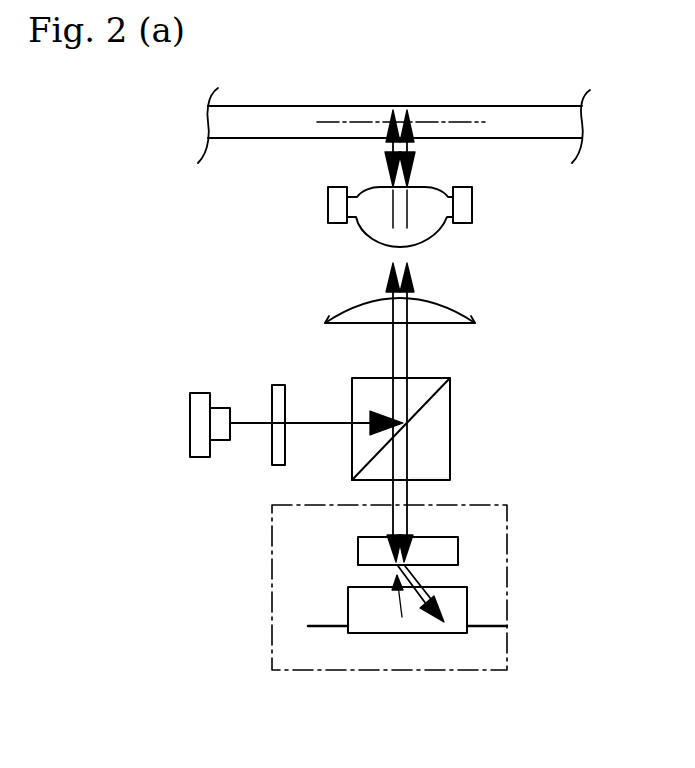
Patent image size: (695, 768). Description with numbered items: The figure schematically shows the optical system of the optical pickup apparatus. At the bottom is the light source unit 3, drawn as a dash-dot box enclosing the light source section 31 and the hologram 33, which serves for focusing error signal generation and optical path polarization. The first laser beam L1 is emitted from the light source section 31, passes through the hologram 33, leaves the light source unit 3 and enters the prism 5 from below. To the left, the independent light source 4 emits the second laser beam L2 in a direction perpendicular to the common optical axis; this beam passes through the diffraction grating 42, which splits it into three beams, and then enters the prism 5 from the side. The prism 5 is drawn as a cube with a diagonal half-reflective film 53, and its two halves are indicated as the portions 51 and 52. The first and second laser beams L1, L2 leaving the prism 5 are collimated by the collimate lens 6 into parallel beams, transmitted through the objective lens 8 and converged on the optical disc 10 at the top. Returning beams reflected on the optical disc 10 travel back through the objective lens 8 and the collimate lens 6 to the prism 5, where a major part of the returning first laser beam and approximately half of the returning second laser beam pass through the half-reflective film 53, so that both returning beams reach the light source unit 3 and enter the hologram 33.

The optical disc 10 is at (543, 128).
The objective lens 8 is at (473, 203).
The collimate lens 6 is at (450, 316).
The prism 5 is at (442, 405).
The beam splitting surface 51 is at (426, 395).
The prism 52 is at (432, 456).
The half-reflective film 53 is at (415, 400).
The independent light source 4 is at (190, 420).
The diffraction grating 42 is at (268, 468).
The light source unit 3 is at (406, 616).
The hologram 33 is at (458, 548).
The light source section 31 is at (427, 643).
The first laser beam L1 is at (398, 578).
The second laser beam L2 is at (320, 425).